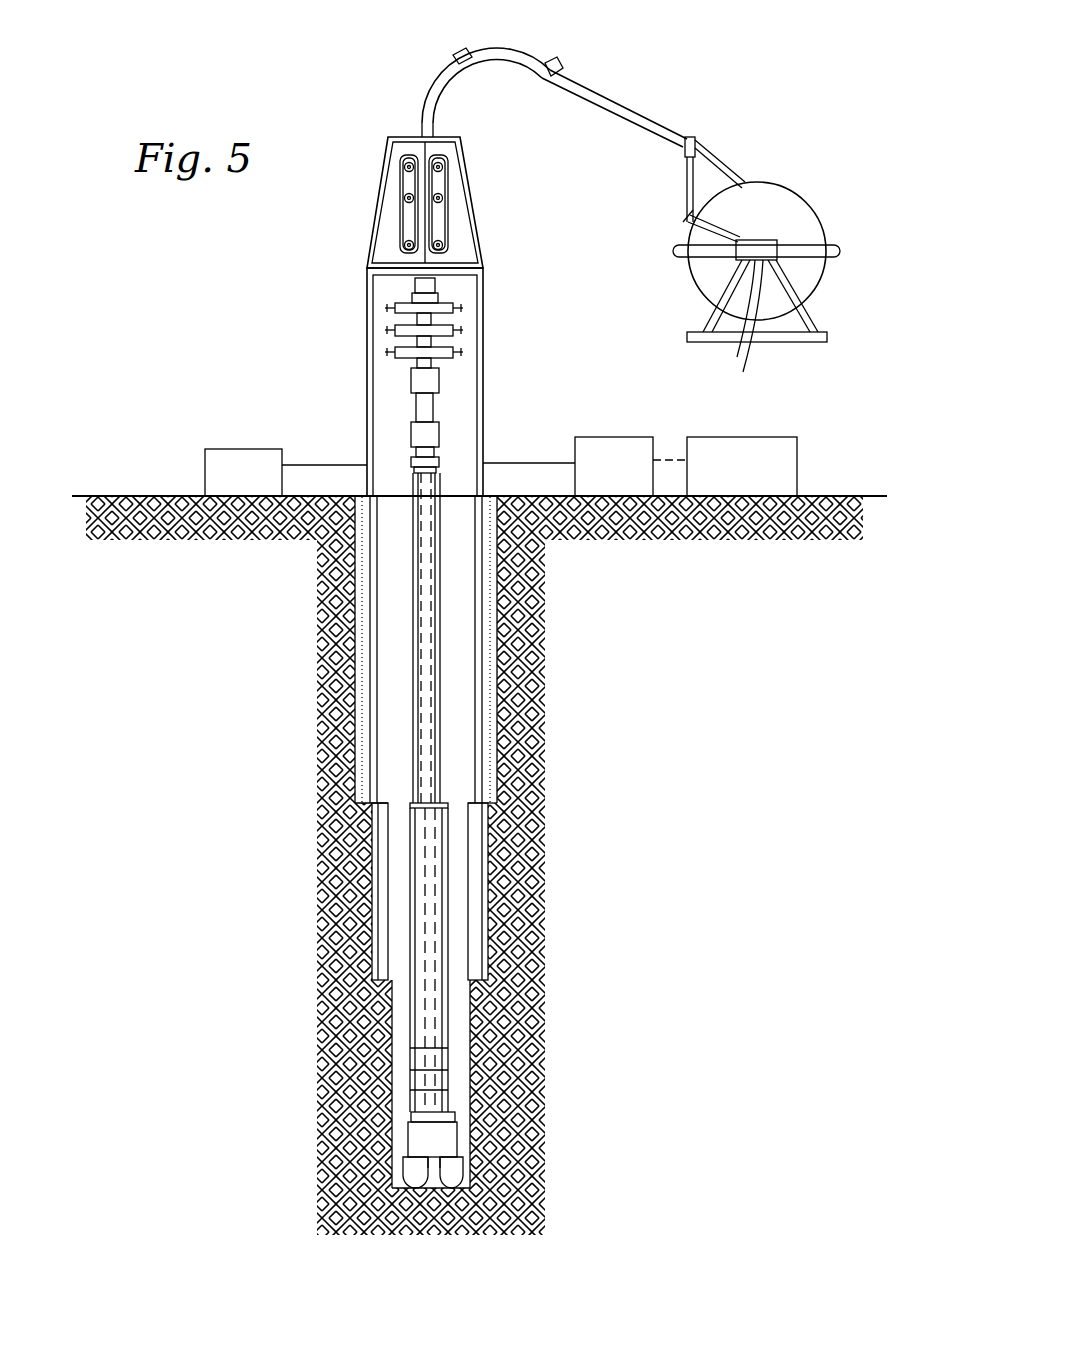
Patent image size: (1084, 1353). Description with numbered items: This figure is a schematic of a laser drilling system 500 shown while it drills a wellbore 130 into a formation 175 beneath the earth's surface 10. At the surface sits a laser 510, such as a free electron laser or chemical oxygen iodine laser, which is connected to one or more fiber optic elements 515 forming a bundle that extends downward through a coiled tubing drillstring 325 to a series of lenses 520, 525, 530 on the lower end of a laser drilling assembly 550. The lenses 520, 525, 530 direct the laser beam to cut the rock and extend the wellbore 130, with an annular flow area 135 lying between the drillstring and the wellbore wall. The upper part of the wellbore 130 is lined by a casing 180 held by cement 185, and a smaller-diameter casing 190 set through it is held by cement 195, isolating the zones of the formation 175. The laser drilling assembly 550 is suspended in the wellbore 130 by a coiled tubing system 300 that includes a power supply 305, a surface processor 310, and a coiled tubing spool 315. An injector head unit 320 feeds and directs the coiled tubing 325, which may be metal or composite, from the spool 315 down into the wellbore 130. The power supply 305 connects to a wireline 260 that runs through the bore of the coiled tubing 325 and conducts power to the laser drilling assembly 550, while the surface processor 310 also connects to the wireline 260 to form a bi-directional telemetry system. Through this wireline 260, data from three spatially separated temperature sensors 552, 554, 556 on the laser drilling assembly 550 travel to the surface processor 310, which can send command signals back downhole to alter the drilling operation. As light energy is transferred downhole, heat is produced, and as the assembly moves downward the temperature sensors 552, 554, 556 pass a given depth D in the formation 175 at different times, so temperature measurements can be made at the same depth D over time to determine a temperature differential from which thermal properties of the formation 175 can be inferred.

The earth's surface 10 is at (821, 494).
The wellbore 130 is at (395, 703).
The annular flow area 135 is at (395, 758).
The formation 175 is at (696, 849).
The casing 180 is at (478, 672).
The cement 185 is at (492, 733).
The casing 190 is at (472, 830).
The cement 195 is at (482, 872).
The wireline 260 is at (522, 461).
The coiled tubing system 300 is at (772, 216).
The power supply 305 is at (612, 437).
The surface processor 310 is at (745, 437).
The coiled tubing spool 315 is at (808, 190).
The injector head unit 320 is at (448, 178).
The coiled tubing 325 is at (615, 98).
The laser drilling system 500 is at (176, 420).
The laser 510 is at (240, 449).
The fiber optic elements 515 is at (333, 463).
The lens 520 is at (420, 1173).
The lens 525 is at (420, 1185).
The lens 530 is at (443, 1175).
The laser drilling assembly 550 is at (452, 915).
The temperature sensor 552 is at (420, 1097).
The temperature sensor 554 is at (420, 1078).
The temperature sensor 556 is at (420, 1055).
The depth D is at (355, 803).